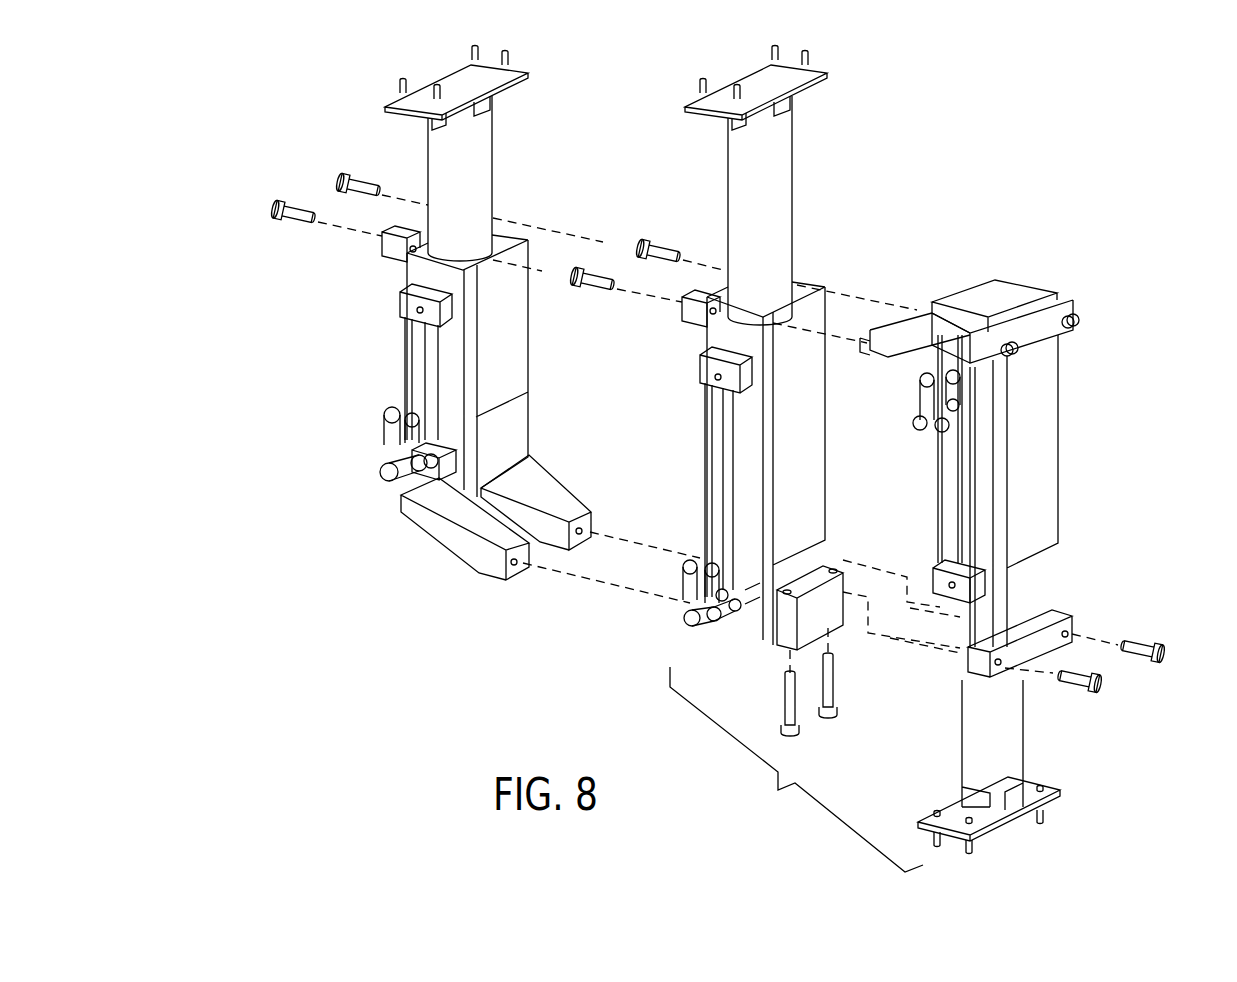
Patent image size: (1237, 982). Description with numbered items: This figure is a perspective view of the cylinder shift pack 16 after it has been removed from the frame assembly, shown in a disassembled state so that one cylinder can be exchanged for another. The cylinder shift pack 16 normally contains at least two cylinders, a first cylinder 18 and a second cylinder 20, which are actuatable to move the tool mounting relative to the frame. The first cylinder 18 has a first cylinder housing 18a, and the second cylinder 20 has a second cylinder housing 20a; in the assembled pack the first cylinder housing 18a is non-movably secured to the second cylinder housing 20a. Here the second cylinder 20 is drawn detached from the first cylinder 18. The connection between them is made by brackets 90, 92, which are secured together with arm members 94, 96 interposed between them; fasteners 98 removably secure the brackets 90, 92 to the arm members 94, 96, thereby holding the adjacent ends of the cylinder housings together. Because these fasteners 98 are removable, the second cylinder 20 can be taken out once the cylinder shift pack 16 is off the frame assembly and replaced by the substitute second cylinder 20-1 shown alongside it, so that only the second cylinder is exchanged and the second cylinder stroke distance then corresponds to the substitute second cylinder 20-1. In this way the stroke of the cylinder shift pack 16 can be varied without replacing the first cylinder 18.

The substitute second cylinder 20-1 is at (368, 542).
The second cylinder 20 is at (808, 202).
The first cylinder 18 is at (1065, 472).
The fasteners 98 is at (663, 250).
The bracket 92 is at (693, 313).
The arm member 94 is at (887, 352).
The arm member 96 is at (970, 298).
The bracket 90 is at (1037, 334).
The second cylinder housing 20a is at (805, 482).
The first cylinder housing 18a is at (1043, 504).
The cylinder shift pack 16 is at (796, 769).